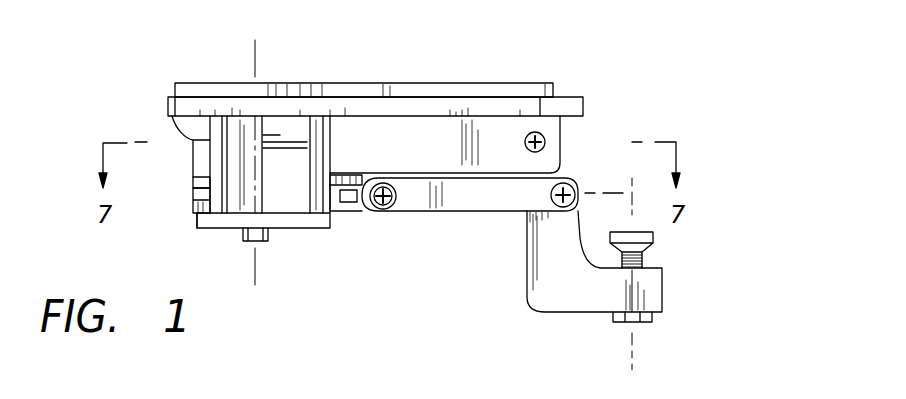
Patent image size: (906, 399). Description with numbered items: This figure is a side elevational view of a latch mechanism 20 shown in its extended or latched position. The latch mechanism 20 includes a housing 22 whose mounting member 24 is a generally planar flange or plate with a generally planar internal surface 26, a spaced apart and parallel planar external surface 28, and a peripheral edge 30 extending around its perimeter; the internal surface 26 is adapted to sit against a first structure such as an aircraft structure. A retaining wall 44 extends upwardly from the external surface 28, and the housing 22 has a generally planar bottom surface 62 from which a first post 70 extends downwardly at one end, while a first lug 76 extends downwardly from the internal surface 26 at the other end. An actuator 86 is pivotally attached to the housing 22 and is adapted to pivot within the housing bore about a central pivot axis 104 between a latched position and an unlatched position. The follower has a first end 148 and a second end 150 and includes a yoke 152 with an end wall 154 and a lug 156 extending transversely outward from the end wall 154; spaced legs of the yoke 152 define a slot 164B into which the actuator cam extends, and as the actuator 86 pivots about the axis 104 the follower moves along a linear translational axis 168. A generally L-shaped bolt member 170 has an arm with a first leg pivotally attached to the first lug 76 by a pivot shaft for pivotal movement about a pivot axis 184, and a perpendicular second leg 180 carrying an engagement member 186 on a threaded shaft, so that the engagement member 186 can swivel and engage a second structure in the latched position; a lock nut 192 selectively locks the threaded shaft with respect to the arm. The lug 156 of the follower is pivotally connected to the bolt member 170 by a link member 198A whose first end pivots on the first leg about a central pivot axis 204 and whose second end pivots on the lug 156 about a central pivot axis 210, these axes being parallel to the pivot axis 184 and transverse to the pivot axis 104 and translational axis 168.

The latch mechanism 20 is at (650, 75).
The housing 22 is at (162, 98).
The mounting member 24 is at (183, 108).
The internal surface 26 is at (583, 122).
The external surface 28 is at (560, 97).
The peripheral edge 30 is at (586, 108).
The retaining wall 44 is at (427, 82).
The bottom surface 62 is at (460, 183).
The first post 70 is at (282, 208).
The first lug 76 is at (545, 160).
The actuator 86 is at (248, 242).
The central pivot axis 104 is at (256, 60).
The first end 148 is at (371, 208).
The second end 150 is at (192, 222).
The yoke 152 is at (193, 183).
The end wall 154 is at (358, 205).
The lug 156 is at (363, 180).
The slot 164B is at (340, 197).
The linear translational axis 168 is at (176, 195).
The bolt member 170 is at (563, 293).
The second leg 180 is at (653, 288).
The pivot axis 184 is at (530, 133).
The engagement member 186 is at (655, 240).
The lock nut 192 is at (648, 322).
The link member 198A is at (492, 200).
The central pivot axis 204 is at (568, 186).
The central pivot axis 210 is at (395, 198).